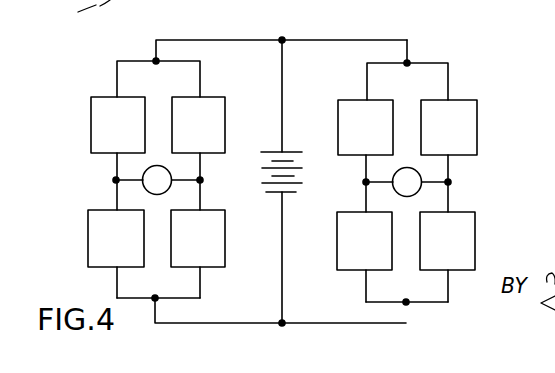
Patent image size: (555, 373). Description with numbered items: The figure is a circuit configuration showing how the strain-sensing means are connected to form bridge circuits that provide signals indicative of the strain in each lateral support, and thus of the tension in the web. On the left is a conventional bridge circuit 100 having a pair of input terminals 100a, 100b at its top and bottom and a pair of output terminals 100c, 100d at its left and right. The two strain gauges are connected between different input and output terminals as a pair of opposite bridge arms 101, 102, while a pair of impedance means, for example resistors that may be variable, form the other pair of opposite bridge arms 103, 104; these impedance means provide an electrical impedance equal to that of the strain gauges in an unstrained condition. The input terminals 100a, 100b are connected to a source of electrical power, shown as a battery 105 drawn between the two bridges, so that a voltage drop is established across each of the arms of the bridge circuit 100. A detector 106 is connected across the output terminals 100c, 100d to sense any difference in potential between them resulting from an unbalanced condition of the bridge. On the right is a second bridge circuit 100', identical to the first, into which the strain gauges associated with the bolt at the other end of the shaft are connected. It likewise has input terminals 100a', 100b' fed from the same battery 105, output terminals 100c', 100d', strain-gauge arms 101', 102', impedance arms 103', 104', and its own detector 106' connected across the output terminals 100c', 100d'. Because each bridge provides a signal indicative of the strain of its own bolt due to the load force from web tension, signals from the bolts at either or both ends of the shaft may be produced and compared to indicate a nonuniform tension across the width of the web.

The bridge circuit 100 is at (280, 165).
The input terminal 100a is at (158, 77).
The input terminal 100b is at (158, 286).
The output terminal 100c is at (94, 176).
The output terminal 100d is at (213, 186).
The bridge arm 101 is at (118, 125).
The bridge arm 102 is at (198, 238).
The bridge arm 103 is at (116, 238).
The bridge arm 104 is at (198, 125).
The battery 105 is at (275, 151).
The detector 106 is at (110, 190).
The bridge circuit 100' is at (393, 38).
The input terminal 100a' is at (407, 80).
The input terminal 100b' is at (407, 288).
The output terminal 100c' is at (350, 192).
The output terminal 100d' is at (473, 192).
The bridge arm 101' is at (365, 127).
The bridge arm 102' is at (447, 241).
The bridge arm 103' is at (364, 241).
The bridge arm 104' is at (449, 127).
The detector 106' is at (452, 176).